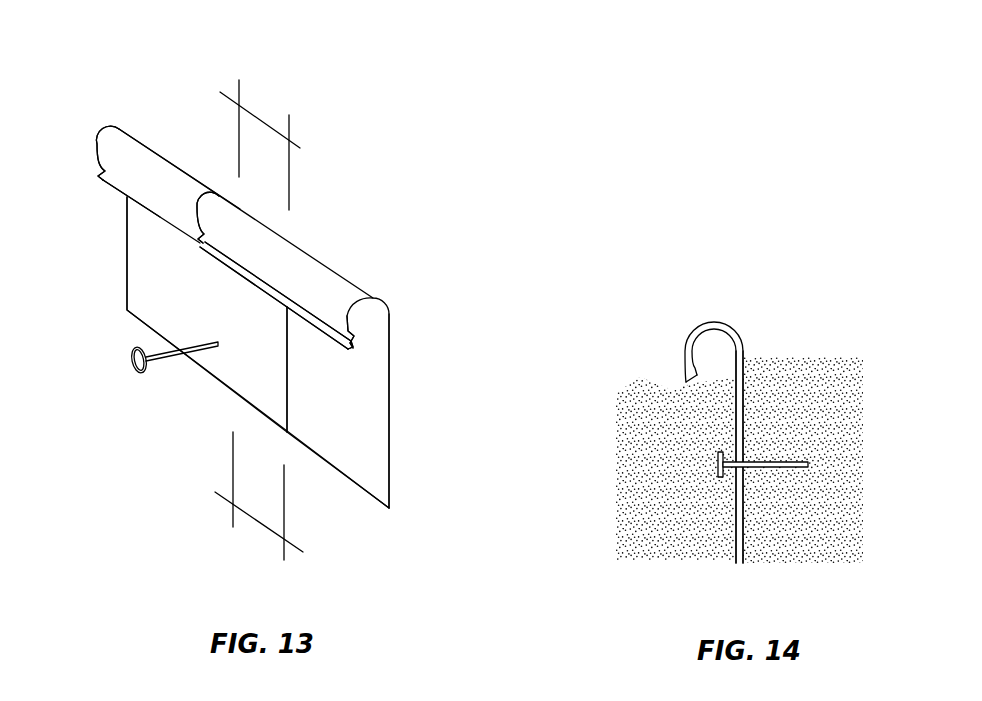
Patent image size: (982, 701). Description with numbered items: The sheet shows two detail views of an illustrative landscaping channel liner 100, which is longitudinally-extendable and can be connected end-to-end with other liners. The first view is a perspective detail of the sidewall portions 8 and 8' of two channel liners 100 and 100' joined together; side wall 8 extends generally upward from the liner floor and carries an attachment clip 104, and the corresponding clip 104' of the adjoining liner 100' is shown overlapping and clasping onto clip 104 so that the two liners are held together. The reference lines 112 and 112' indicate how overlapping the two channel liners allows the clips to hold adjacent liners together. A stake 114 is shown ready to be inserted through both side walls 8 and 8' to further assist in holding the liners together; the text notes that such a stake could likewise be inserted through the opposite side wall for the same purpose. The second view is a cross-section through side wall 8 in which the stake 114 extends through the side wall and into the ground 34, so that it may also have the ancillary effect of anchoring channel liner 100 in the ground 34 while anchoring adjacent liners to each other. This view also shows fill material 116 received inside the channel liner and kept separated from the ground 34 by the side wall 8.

In FIG. 13, the landscaping channel liner 100 is at (219, 317).
In FIG. 14, the landscaping channel liner 100 is at (767, 477).
In FIG. 13, the adjoining landscaping channel liner 100' is at (335, 350).
In FIG. 13, the attachment clip 104 is at (168, 165).
In FIG. 13, the attachment clip of adjoining liner 104' is at (312, 270).
In FIG. 13, the side wall 8 is at (207, 314).
In FIG. 14, the side wall 8 is at (659, 457).
In FIG. 13, the side wall of adjoining liner 8' is at (338, 407).
In FIG. 13, the overlap indication 112 is at (264, 341).
In FIG. 13, the overlap indication 112' is at (237, 307).
In FIG. 13, the stake 114 is at (122, 374).
In FIG. 14, the stake 114 is at (716, 461).
In FIG. 14, the fill material 116 is at (651, 404).
In FIG. 14, the ground 34 is at (829, 389).